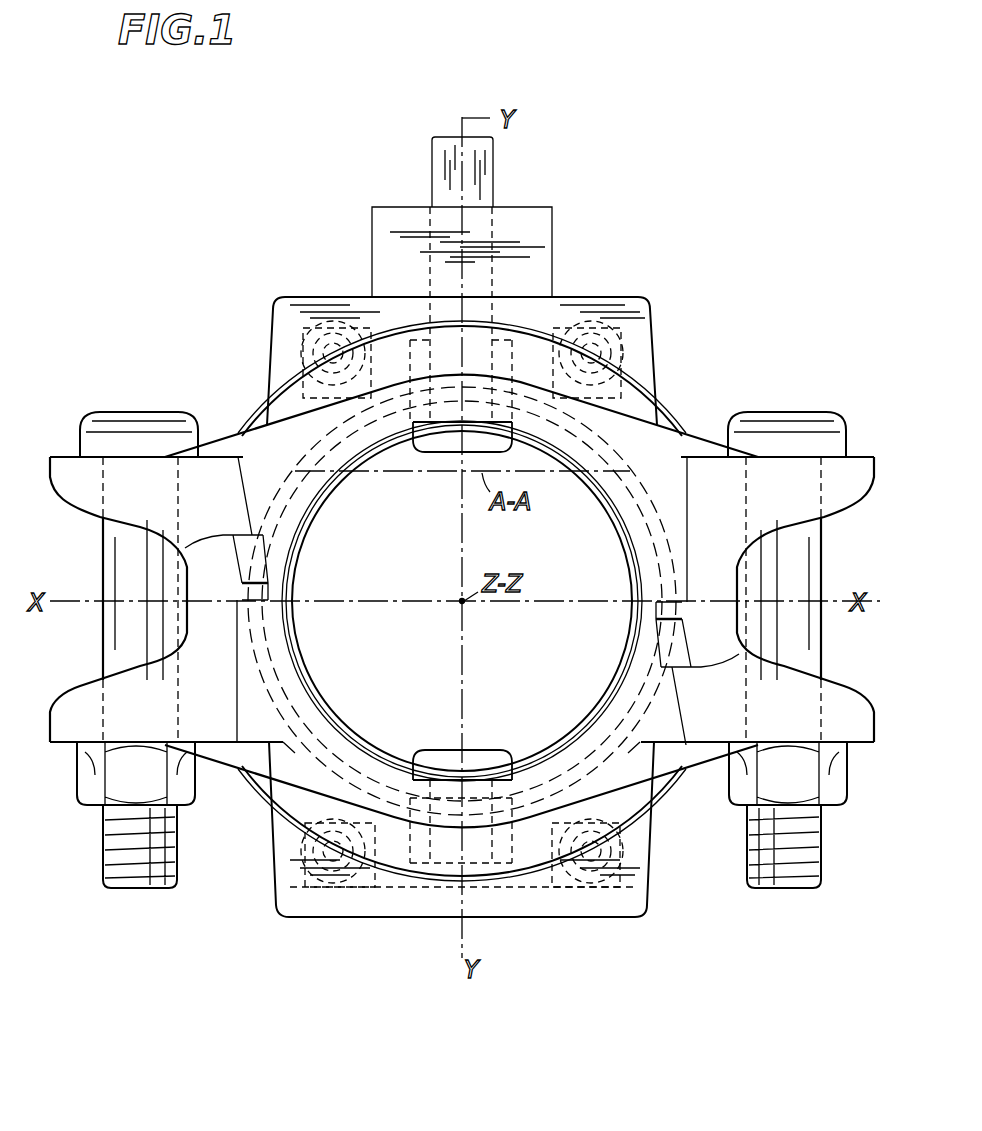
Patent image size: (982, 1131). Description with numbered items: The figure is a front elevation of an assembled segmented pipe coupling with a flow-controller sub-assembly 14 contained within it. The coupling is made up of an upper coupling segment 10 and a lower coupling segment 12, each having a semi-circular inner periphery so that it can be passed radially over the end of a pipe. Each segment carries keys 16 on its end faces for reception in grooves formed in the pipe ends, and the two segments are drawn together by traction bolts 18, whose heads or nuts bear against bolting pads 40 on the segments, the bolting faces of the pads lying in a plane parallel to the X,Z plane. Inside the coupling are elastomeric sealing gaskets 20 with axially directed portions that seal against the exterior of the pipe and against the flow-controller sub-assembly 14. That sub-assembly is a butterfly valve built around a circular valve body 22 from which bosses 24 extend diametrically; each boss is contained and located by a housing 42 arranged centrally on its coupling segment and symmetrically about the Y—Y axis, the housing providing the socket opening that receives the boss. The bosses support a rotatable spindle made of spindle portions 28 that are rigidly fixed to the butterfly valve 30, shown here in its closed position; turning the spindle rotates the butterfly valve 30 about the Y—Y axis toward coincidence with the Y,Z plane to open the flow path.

The upper coupling segment 10 is at (625, 390).
The lower coupling segment 12 is at (648, 797).
The flow-controller sub-assembly 14 is at (566, 223).
The keys 16 is at (595, 465).
The traction bolts 18 is at (110, 553).
The sealing gaskets 20 is at (297, 539).
The circular valve body 22 is at (328, 493).
The bosses 24 is at (652, 308).
The spindle portions 28 is at (484, 172).
The butterfly valve 30 is at (413, 666).
The bolting pads 40 is at (66, 462).
The housing 42 is at (288, 303).